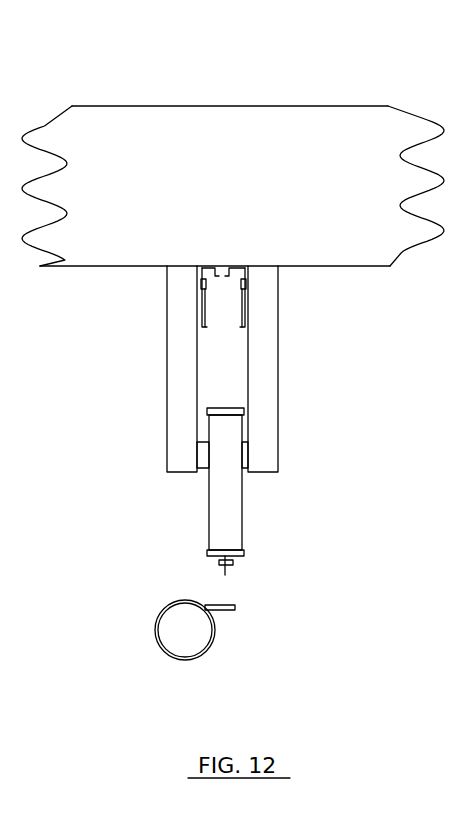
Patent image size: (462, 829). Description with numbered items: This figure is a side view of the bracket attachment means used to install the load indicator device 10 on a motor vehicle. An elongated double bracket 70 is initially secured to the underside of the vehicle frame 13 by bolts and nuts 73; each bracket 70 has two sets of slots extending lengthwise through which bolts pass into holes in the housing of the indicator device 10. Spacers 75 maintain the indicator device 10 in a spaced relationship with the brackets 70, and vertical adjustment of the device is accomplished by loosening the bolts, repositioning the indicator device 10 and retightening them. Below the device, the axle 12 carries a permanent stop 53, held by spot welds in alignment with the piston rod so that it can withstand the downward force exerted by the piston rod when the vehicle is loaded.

The frame 13 is at (161, 145).
The elongated double bracket 70 is at (182, 373).
The nuts 73 is at (243, 291).
The spacers 75 is at (205, 450).
The load indicator device 10 is at (208, 512).
The axle 12 is at (205, 652).
The permanent stop 53 is at (237, 607).